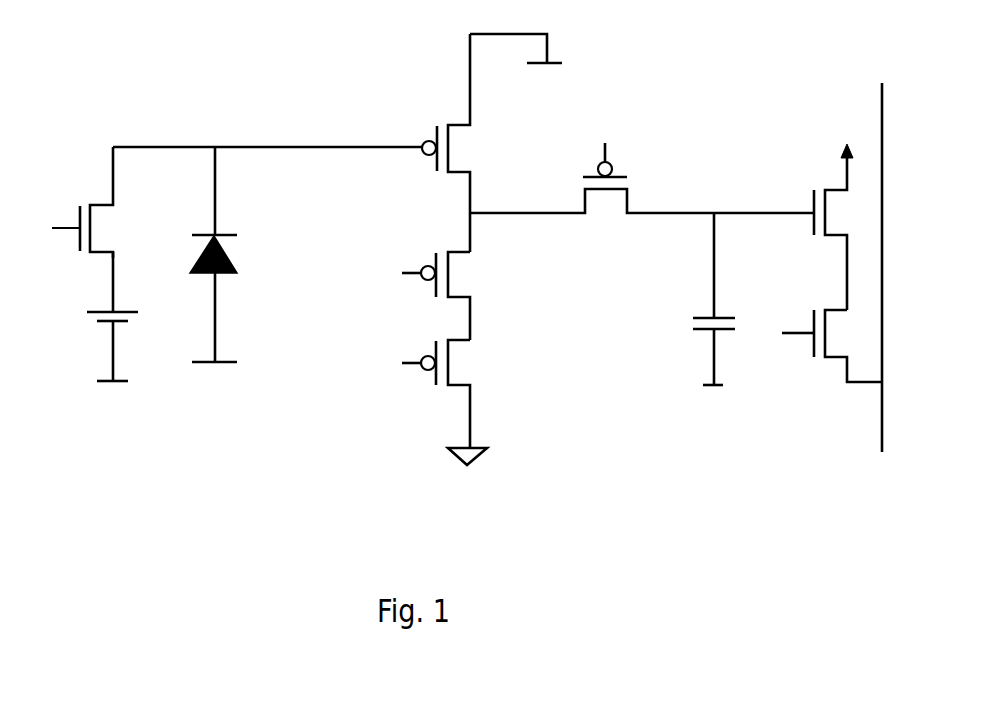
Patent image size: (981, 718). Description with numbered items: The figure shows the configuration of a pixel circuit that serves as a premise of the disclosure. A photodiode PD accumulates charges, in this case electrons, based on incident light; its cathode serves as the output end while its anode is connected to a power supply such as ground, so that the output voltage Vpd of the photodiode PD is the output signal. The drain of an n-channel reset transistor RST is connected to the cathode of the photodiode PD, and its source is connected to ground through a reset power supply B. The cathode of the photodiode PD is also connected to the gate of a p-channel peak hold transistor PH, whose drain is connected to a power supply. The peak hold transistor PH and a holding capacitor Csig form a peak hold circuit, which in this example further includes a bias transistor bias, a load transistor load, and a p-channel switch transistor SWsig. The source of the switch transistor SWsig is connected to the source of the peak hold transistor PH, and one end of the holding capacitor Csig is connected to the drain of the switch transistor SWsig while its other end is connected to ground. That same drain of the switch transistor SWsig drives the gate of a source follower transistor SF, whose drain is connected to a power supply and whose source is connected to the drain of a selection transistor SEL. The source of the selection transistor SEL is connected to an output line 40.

The output line 40 is at (877, 98).
The reset transistor RST is at (68, 202).
The reset power supply B is at (98, 316).
The photodiode PD is at (192, 254).
The output voltage Vpd is at (267, 126).
The peak hold transistor PH is at (492, 143).
The bias transistor bias is at (421, 291).
The load transistor load is at (430, 397).
The switch transistor SWsig is at (642, 160).
The holding capacitor Csig is at (673, 299).
The source follower transistor SF is at (841, 227).
The selection transistor SEL is at (832, 346).